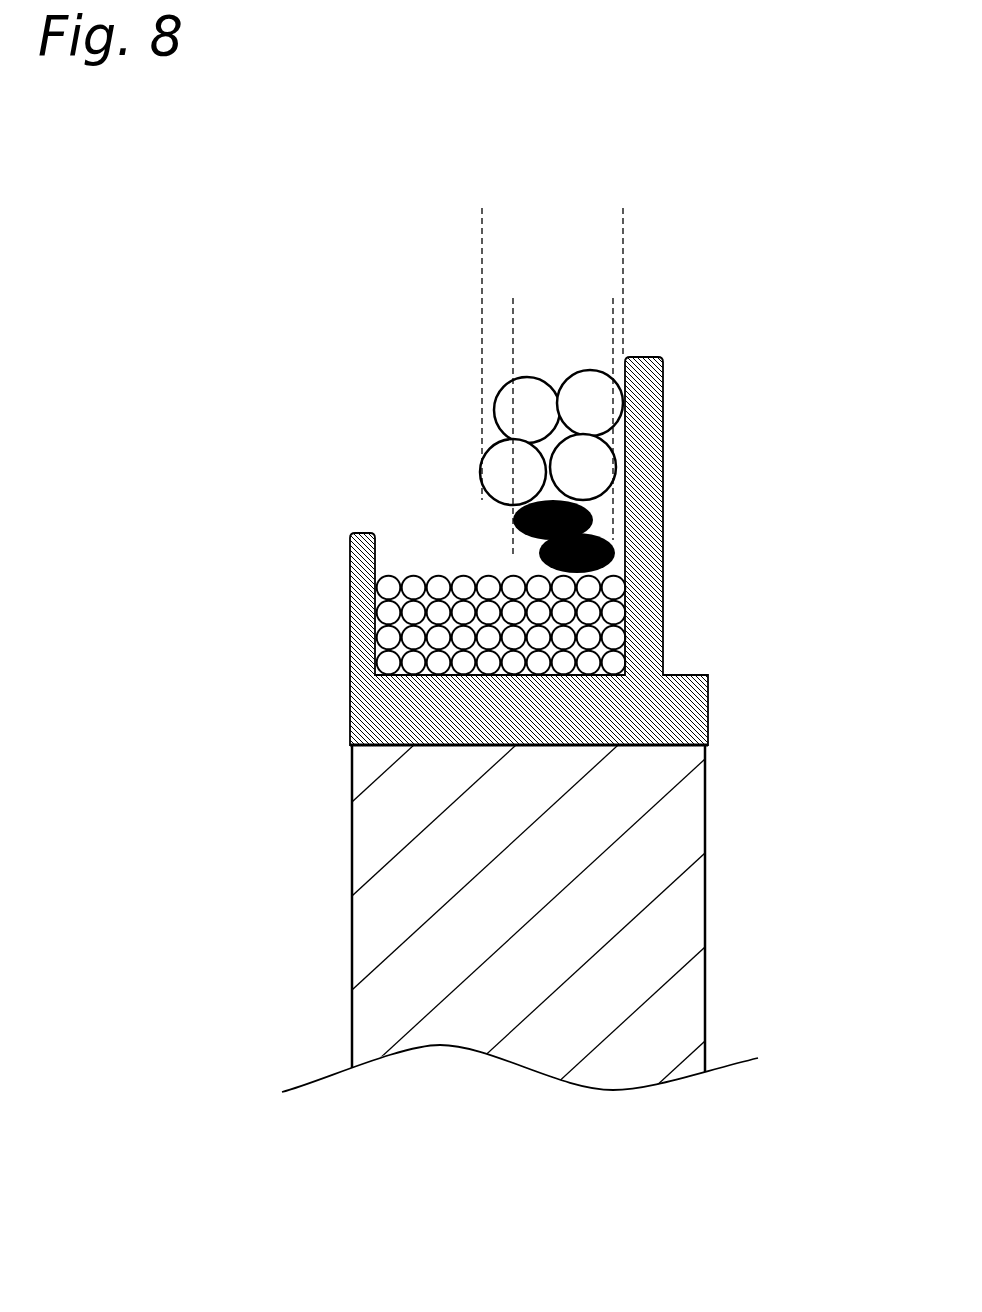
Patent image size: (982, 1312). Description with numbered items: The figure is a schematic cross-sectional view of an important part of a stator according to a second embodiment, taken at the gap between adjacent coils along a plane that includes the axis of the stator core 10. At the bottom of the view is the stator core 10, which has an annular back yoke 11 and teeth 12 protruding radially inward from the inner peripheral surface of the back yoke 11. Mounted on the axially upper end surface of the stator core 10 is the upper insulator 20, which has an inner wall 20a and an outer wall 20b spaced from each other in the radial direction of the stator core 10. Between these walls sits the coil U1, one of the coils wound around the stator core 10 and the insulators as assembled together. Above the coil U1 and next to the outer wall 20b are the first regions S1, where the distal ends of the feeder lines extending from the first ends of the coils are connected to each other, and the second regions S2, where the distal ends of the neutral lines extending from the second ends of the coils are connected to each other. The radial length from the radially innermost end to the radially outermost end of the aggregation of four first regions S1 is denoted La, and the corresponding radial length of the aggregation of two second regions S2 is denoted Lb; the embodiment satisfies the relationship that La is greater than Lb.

The stator core 10 is at (548, 894).
The back yoke 11 is at (668, 903).
The teeth 12 is at (375, 935).
The upper insulator 20 is at (520, 551).
The inner wall 20a is at (355, 633).
The outer wall 20b is at (650, 545).
The coil U1 is at (607, 633).
The first region S1 is at (551, 437).
The second region S2 is at (564, 536).
The radial length La is at (623, 235).
The radial length Lb is at (613, 335).